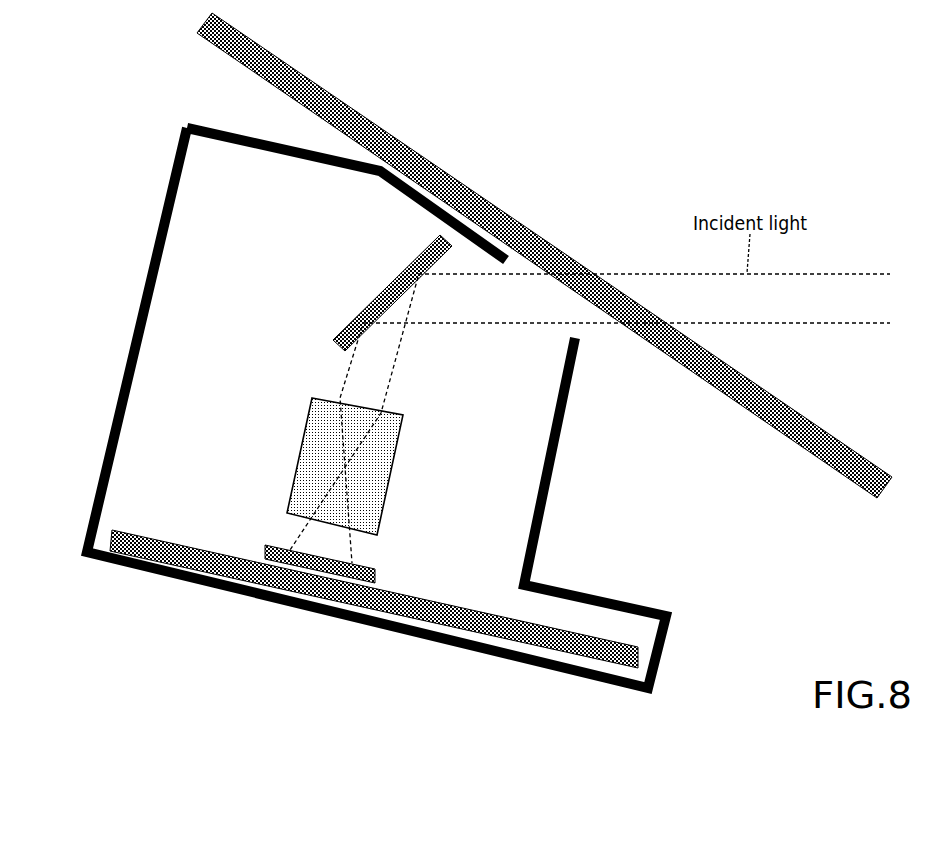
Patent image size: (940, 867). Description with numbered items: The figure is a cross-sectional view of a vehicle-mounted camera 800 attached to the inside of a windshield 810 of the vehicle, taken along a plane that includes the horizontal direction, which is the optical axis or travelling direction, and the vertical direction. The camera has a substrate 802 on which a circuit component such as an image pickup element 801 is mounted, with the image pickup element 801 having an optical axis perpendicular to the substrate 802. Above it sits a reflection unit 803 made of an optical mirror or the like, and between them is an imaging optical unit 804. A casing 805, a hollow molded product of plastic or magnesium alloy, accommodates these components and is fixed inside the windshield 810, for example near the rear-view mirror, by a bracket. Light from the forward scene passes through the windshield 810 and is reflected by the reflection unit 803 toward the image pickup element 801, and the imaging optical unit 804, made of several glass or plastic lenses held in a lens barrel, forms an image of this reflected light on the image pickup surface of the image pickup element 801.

The vehicle-mounted camera 800 is at (238, 632).
The image pickup element 801 is at (372, 567).
The substrate 802 is at (167, 537).
The reflection unit 803 is at (377, 290).
The imaging optical unit 804 is at (312, 398).
The casing 805 is at (205, 128).
The windshield 810 is at (283, 58).